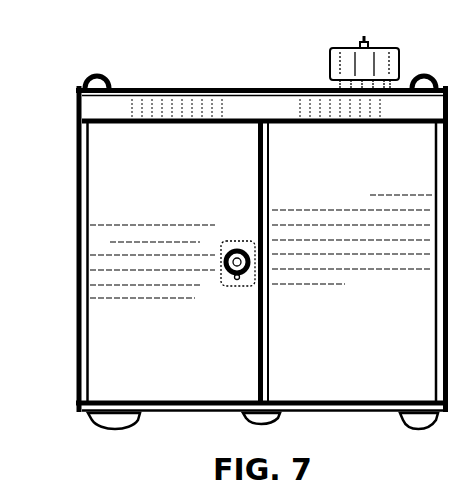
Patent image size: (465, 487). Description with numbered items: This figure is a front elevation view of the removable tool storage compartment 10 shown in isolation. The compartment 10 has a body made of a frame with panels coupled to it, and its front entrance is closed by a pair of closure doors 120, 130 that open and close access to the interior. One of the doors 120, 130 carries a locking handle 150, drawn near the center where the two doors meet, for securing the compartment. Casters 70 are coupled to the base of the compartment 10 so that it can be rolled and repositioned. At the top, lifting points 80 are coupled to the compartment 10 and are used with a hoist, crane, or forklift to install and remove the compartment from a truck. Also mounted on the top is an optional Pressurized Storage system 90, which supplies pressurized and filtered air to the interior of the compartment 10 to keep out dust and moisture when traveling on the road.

The tool storage compartment 10 is at (88, 54).
The casters 70 is at (118, 437).
The lifting points 80 is at (100, 72).
The Pressurized Storage system (PSS) 90 is at (372, 50).
The closure door 120 is at (190, 349).
The closure door 130 is at (367, 349).
The locking handle 150 is at (232, 250).